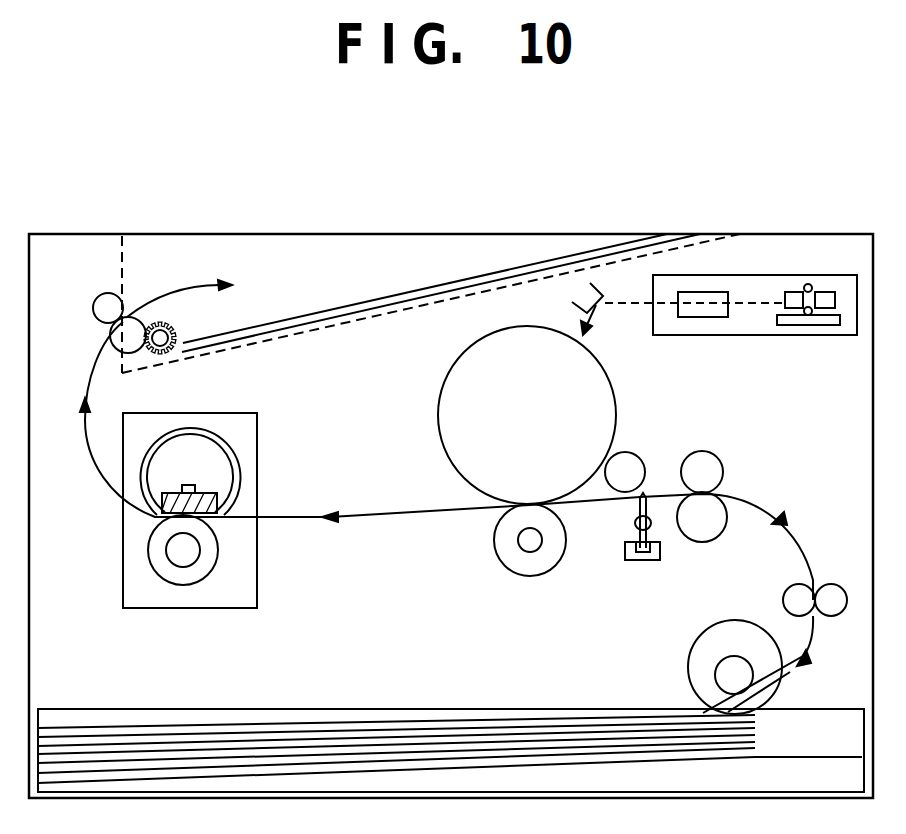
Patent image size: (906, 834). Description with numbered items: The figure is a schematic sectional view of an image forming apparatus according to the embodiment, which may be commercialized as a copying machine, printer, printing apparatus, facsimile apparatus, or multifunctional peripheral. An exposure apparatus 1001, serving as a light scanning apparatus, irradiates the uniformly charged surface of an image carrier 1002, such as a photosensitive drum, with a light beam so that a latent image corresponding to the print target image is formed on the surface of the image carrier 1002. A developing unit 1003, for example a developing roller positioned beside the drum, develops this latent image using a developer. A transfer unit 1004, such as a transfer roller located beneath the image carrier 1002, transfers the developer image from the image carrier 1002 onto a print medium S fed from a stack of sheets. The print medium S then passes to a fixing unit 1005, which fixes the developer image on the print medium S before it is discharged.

The exposure apparatus 1001 is at (818, 336).
The image carrier 1002 is at (612, 379).
The developing unit 1003 is at (670, 436).
The transfer unit 1004 is at (530, 577).
The fixing unit 1005 is at (158, 610).
The print medium S is at (605, 712).